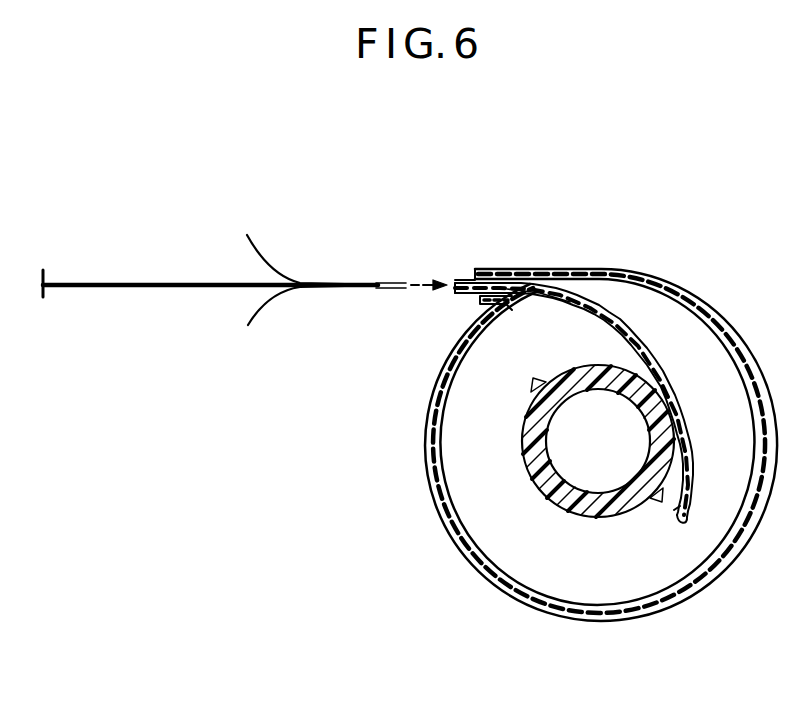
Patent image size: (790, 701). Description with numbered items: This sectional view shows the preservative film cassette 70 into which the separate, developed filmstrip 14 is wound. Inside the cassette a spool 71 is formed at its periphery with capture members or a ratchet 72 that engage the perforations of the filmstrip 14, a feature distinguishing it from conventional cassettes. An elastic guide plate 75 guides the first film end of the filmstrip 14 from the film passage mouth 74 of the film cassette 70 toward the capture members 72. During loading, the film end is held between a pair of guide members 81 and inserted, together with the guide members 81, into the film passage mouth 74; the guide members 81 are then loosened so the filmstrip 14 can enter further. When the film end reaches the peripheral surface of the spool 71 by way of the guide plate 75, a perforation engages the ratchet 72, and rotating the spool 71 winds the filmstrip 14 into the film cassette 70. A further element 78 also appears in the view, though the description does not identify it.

The filmstrip 14 is at (131, 290).
The preservative film cassette 70 is at (549, 394).
The spool 71 is at (571, 514).
The capture members or ratchet 72 is at (548, 497).
The film passage mouth 74 is at (442, 262).
The elastic guide plate 75 is at (648, 343).
The joint plates 78 is at (461, 270).
The guide members 81 is at (270, 262).